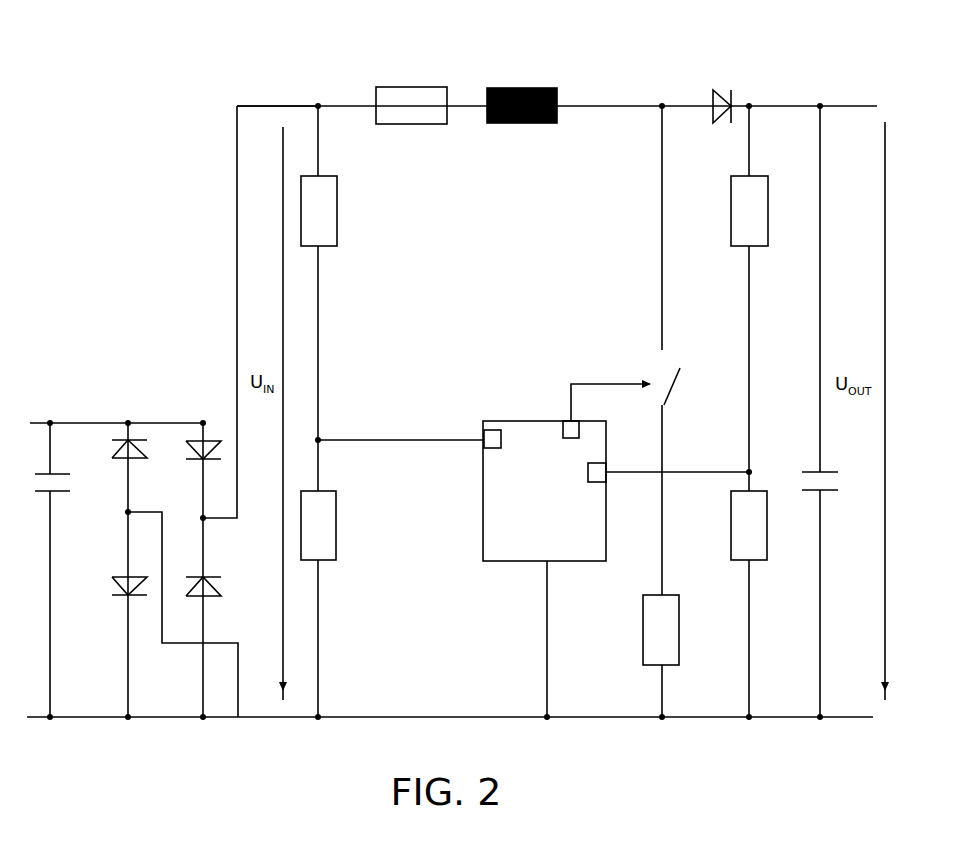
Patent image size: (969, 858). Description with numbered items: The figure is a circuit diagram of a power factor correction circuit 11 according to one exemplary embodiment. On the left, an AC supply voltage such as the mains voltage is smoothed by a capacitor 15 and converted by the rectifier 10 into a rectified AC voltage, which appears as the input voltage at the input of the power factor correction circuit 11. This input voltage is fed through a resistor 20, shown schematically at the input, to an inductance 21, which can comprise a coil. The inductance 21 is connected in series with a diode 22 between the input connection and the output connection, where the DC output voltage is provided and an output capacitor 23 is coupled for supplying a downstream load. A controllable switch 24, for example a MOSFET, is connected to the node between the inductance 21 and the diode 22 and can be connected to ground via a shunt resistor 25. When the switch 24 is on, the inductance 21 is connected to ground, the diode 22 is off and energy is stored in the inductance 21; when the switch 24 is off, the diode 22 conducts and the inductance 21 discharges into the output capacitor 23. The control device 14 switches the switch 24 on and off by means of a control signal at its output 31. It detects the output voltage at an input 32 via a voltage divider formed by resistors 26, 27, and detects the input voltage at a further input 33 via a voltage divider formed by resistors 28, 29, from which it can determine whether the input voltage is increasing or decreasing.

The rectifier 10 is at (112, 396).
The power factor correction circuit 11 is at (295, 52).
The control device 14 is at (566, 539).
The capacitor 15 is at (63, 473).
The resistor 20 is at (426, 87).
The inductance 21 is at (536, 88).
The diode 22 is at (718, 90).
The output capacitor 23 is at (836, 472).
The controllable switch 24 is at (670, 349).
The shunt resistor 25 is at (679, 595).
The resistor 26 is at (768, 176).
The resistor 27 is at (768, 561).
The resistor 28 is at (338, 176).
The resistor 29 is at (337, 562).
The output 31 is at (565, 421).
The input 32 is at (597, 482).
The further input 33 is at (484, 432).